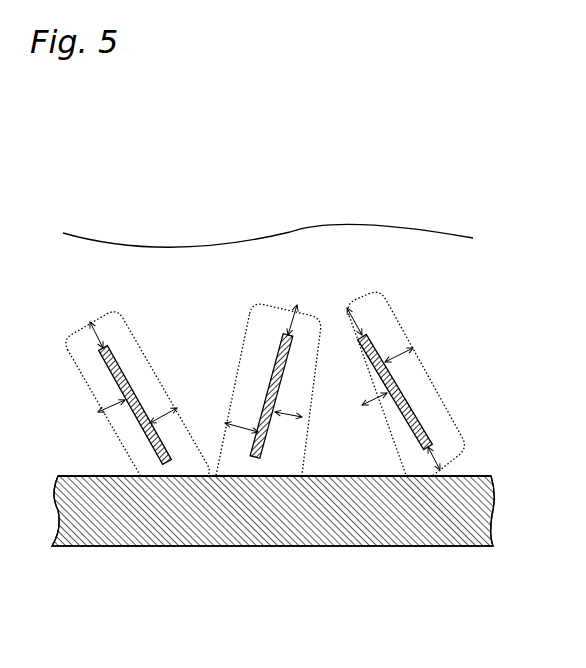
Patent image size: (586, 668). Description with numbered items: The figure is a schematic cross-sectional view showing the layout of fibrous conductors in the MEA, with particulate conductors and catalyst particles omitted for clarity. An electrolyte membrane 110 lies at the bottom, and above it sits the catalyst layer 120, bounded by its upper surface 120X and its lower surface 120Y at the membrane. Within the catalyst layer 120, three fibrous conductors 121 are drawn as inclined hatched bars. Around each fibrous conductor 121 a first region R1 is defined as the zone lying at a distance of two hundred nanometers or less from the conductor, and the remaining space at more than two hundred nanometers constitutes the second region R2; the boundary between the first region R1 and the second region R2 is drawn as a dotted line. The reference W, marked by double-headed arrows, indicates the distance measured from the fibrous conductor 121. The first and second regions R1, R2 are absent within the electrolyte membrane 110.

The electrolyte membrane 110 is at (255, 530).
The catalyst layer 120 is at (304, 376).
The surface of the catalyst layer 120X is at (88, 236).
The surface of the catalyst layer 120Y is at (82, 476).
The fibrous conductor 121 is at (460, 358).
The first region R1 is at (80, 360).
The second region R2 is at (331, 273).
The distance from the fibrous conductor W is at (274, 387).